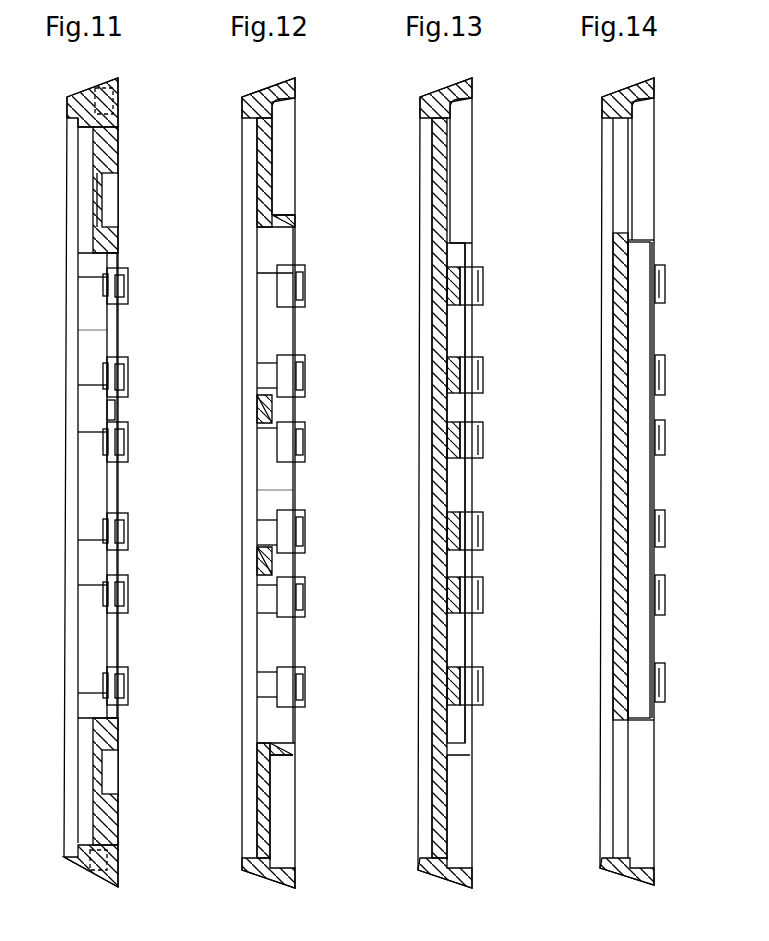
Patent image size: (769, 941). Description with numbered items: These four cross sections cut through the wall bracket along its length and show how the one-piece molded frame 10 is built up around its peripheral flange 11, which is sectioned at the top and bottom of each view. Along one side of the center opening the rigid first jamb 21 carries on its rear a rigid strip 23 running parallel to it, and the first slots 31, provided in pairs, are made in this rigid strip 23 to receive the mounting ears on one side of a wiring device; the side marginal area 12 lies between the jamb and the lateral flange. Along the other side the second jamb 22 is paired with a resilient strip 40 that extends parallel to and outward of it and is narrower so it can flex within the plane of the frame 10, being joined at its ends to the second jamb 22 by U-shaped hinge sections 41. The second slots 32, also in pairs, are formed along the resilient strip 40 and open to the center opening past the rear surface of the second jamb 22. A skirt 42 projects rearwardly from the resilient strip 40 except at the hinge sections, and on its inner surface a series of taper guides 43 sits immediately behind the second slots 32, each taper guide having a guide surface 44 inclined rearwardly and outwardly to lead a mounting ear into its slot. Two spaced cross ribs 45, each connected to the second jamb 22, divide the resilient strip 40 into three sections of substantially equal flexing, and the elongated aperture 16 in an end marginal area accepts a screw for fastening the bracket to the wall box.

In FIG. 11, the frame 10 is at (66, 95).
In FIG. 12, the frame 10 is at (240, 95).
In FIG. 13, the frame 10 is at (418, 94).
In FIG. 14, the frame 10 is at (600, 94).
In FIG. 11, the peripheral flange 11 is at (72, 875).
In FIG. 12, the peripheral flange 11 is at (250, 877).
In FIG. 13, the peripheral flange 11 is at (425, 877).
In FIG. 14, the peripheral flange 11 is at (608, 872).
In FIG. 13, the side marginal area 12 is at (439, 488).
In FIG. 14, the side marginal area 12 is at (620, 550).
In FIG. 11, the elongated aperture 16 is at (112, 207).
In FIG. 13, the first jamb 21 is at (452, 492).
In FIG. 11, the second jamb 22 is at (85, 447).
In FIG. 13, the rigid strip 23 is at (440, 408).
In FIG. 14, the rigid strip 23 is at (640, 410).
In FIG. 13, the first slot 31 is at (483, 360).
In FIG. 11, the second slot 32 is at (103, 372).
In FIG. 12, the second slot 32 is at (282, 378).
In FIG. 12, the resilient strip 40 is at (268, 250).
In FIG. 12, the U-shaped hinge section 41 is at (290, 221).
In FIG. 12, the skirt 42 is at (293, 490).
In FIG. 11, the taper guide 43 is at (128, 360).
In FIG. 12, the taper guide 43 is at (305, 268).
In FIG. 13, the taper guide 43 is at (485, 272).
In FIG. 14, the taper guide 43 is at (666, 355).
In FIG. 11, the guide surface 44 is at (120, 287).
In FIG. 12, the guide surface 44 is at (300, 370).
In FIG. 12, the cross rib 45 is at (260, 410).